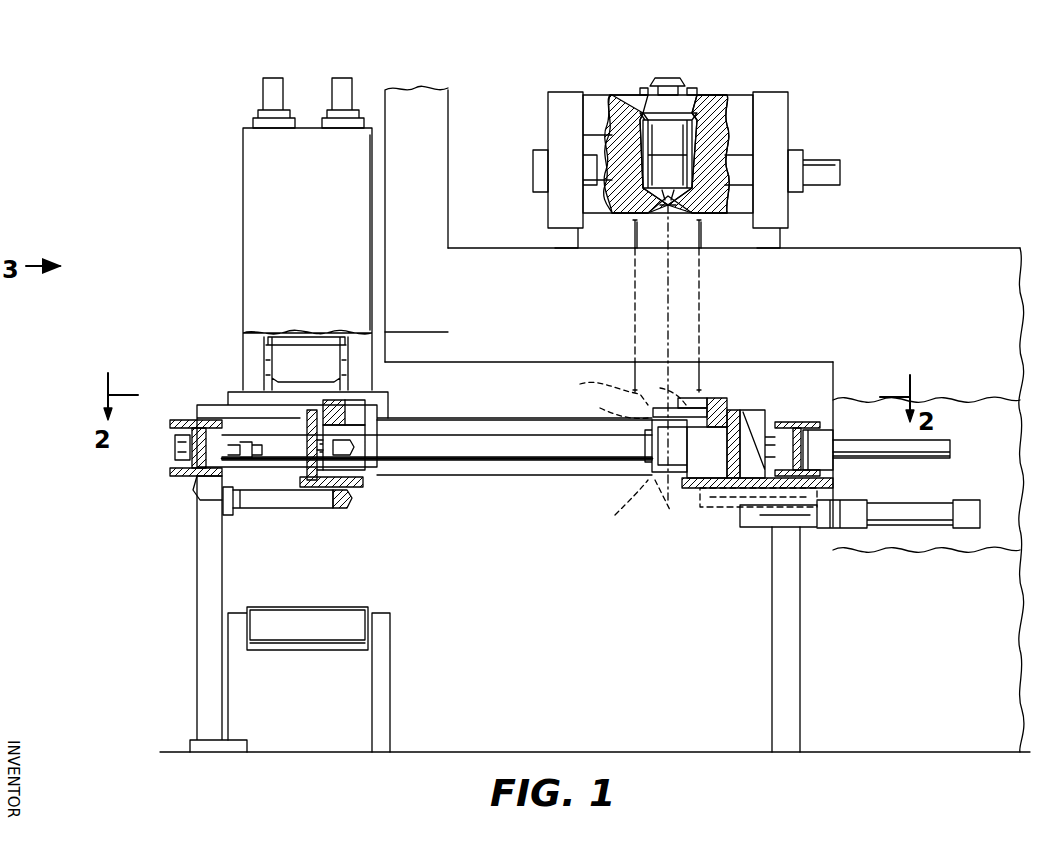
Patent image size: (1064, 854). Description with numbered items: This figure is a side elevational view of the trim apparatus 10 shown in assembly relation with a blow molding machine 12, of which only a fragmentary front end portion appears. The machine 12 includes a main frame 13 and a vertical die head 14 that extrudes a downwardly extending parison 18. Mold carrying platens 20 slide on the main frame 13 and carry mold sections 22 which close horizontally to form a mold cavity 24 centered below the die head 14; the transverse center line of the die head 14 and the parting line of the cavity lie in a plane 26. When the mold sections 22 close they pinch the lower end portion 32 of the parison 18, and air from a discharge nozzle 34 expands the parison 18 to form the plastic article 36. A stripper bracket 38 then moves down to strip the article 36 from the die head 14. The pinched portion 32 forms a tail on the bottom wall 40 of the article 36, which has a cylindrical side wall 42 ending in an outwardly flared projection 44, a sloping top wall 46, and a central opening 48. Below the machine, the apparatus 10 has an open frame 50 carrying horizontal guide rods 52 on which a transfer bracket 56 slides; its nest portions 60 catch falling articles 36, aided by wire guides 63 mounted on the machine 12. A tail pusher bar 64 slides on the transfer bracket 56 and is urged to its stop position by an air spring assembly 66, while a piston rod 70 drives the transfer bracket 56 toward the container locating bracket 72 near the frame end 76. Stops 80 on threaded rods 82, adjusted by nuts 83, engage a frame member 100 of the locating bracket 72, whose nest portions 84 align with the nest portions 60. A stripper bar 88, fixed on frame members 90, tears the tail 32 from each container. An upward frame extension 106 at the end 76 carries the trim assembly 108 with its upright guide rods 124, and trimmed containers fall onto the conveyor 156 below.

The trim apparatus 10 is at (110, 518).
The blow molding machine 12 is at (1002, 296).
The main frame 13 is at (832, 252).
The die head 14 is at (672, 78).
The parison 18 is at (703, 102).
The mold carrying platens 20 is at (566, 92).
The mold sections 22 is at (597, 100).
The mold cavity 24 is at (700, 140).
The plane 26 is at (668, 313).
The lower end portion 32 is at (666, 204).
The discharge nozzle 34 is at (690, 92).
The plastic article 36 is at (648, 128).
The stripper bracket 38 is at (646, 86).
The bottom wall 40 is at (638, 507).
The cylindrical side wall 42 is at (652, 452).
The side wall projection 44 is at (631, 403).
The top wall 46 is at (602, 387).
The central opening 48 is at (700, 396).
The frame 50 is at (466, 416).
The guide rods 52 is at (497, 454).
The transfer bracket 56 is at (758, 414).
The nest portions 60 is at (722, 400).
The wire guides 63 is at (703, 314).
The tail pusher bar 64 is at (690, 496).
The air spring assembly 66 is at (872, 508).
The piston rod 70 is at (940, 440).
The container locating bracket 72 is at (398, 402).
The end 76 is at (178, 420).
The stops 80 is at (323, 450).
The threaded rods 82 is at (262, 495).
The nuts 83 is at (348, 440).
The nest portions 84 is at (372, 481).
The stripper bar 88 is at (347, 500).
The frame members 90 is at (333, 508).
The frame member 100 is at (316, 488).
The frame extension 106 is at (320, 226).
The trim assembly 108 is at (314, 374).
The guide rods 124 is at (343, 78).
The conveyor 156 is at (320, 607).